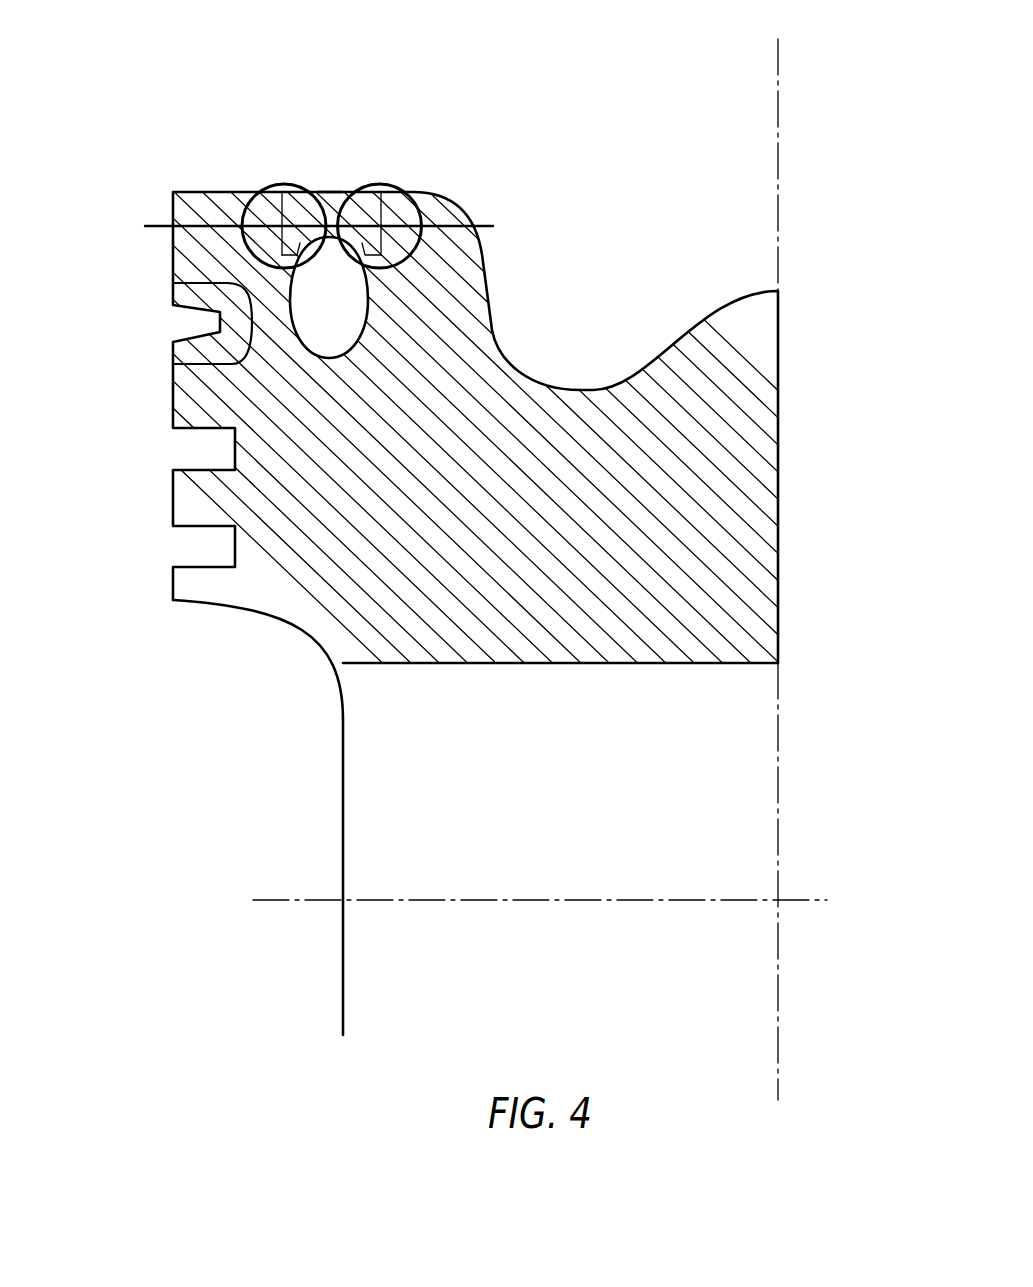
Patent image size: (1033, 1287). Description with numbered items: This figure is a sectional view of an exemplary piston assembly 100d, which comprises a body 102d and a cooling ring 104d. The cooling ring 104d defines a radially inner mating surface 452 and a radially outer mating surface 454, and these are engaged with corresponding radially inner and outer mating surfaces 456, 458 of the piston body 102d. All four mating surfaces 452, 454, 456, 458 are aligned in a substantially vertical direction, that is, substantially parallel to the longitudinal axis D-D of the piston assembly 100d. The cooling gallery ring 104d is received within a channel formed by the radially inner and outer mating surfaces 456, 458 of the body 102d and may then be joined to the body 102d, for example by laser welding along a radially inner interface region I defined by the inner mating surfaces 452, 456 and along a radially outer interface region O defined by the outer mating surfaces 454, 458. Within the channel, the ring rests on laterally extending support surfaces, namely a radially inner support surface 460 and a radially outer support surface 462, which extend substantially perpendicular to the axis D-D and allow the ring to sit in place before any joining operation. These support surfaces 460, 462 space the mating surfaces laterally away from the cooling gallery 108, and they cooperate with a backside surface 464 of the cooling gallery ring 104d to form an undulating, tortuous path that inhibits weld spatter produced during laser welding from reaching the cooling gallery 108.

The piston assembly 100d is at (137, 100).
The body 102d is at (271, 592).
The cooling ring 104d is at (328, 192).
The cooling gallery 108 is at (345, 316).
The radially inner mating surface 452 is at (384, 207).
The radially outer mating surface 454 is at (259, 191).
The radially inner mating surface 456 is at (374, 184).
The radially outer mating surface 458 is at (298, 245).
The radially inner support surface 460 is at (384, 240).
The radially outer support surface 462 is at (281, 233).
The backside surface 464 is at (386, 272).